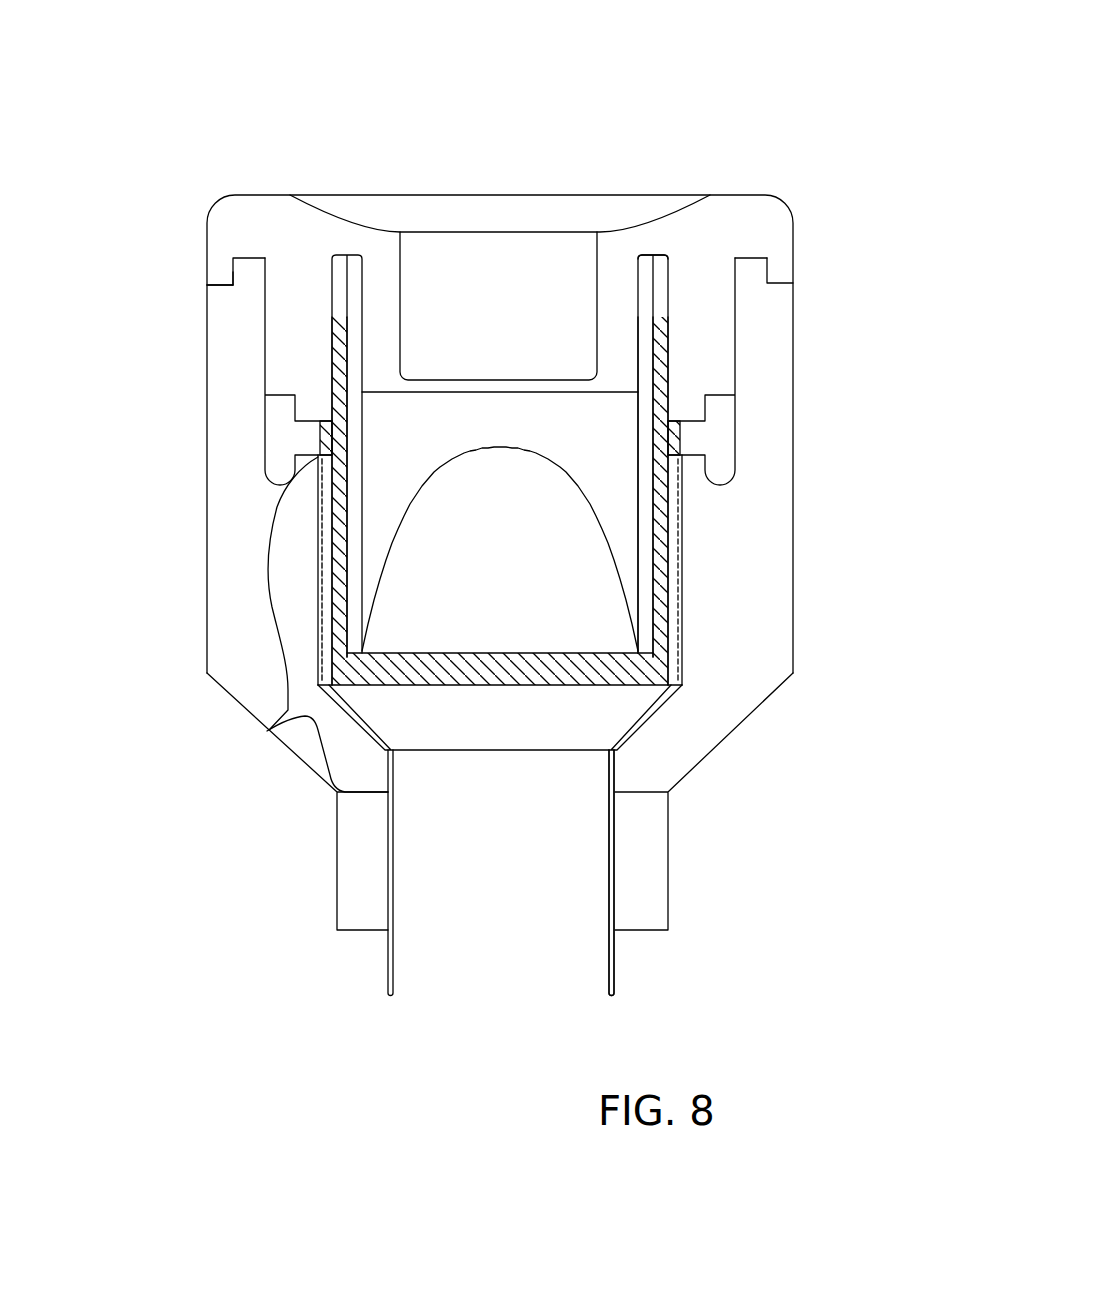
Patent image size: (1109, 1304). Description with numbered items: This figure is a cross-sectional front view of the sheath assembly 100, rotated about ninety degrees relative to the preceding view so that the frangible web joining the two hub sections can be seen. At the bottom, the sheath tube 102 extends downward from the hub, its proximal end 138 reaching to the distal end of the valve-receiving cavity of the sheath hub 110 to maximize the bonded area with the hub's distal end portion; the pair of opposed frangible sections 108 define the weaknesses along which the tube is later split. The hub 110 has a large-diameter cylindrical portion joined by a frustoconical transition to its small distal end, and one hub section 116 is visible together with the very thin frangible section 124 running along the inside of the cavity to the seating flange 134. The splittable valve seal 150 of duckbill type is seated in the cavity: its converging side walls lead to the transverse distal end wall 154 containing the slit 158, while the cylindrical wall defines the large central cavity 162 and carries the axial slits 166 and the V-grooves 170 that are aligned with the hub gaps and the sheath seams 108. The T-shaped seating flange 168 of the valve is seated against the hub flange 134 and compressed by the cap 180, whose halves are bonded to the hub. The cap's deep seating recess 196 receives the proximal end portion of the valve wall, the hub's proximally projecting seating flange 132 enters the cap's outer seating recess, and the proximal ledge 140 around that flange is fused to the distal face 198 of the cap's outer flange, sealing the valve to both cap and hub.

The sheath assembly 100 is at (705, 108).
The sheath tube 102 is at (624, 972).
The frangible sections 108 is at (607, 962).
The sheath hub 110 is at (206, 607).
The hub section 116 is at (343, 325).
The frangible section 124 is at (267, 730).
The seating flange 132 is at (230, 268).
The seating flange 134 is at (688, 463).
The proximal end of sheath 138 is at (562, 752).
The proximal ledge 140 is at (213, 280).
The splittable valve seal 150 is at (667, 612).
The distal end wall 154 is at (601, 686).
The slit 158 is at (622, 670).
The central cavity 162 is at (608, 428).
The slits 166 is at (330, 300).
The seating flange 168 is at (742, 448).
The V-grooves 170 is at (650, 557).
The cap 180 is at (212, 203).
The deep seating recess 196 is at (645, 250).
The distal face 198 is at (223, 290).